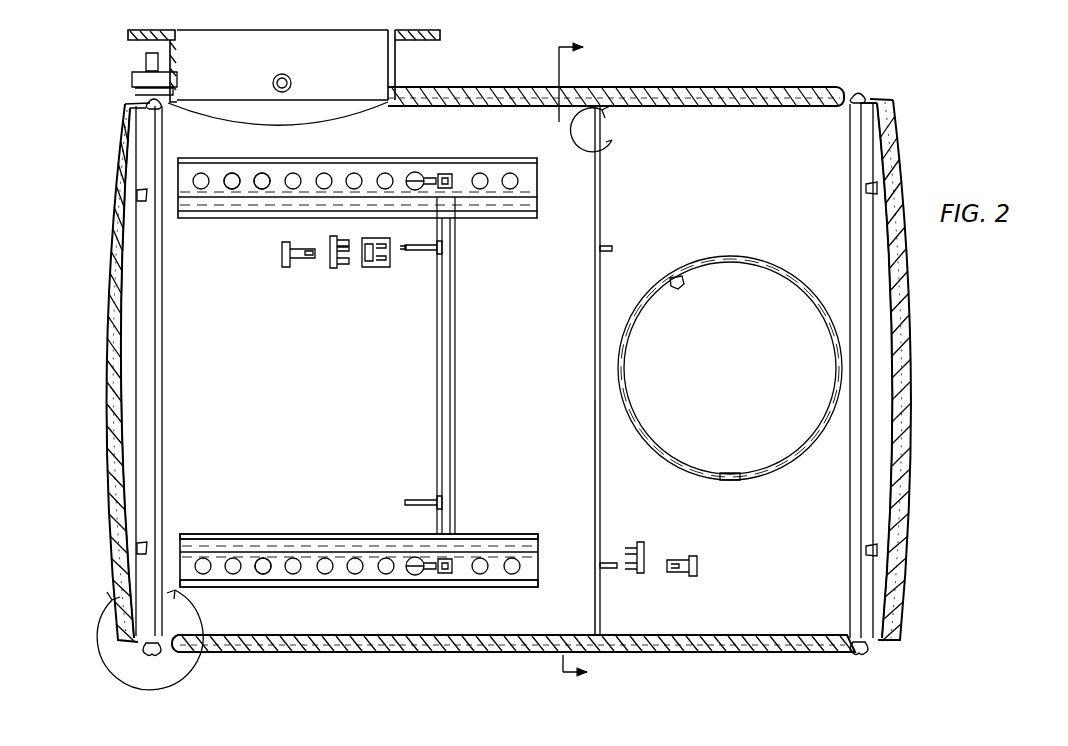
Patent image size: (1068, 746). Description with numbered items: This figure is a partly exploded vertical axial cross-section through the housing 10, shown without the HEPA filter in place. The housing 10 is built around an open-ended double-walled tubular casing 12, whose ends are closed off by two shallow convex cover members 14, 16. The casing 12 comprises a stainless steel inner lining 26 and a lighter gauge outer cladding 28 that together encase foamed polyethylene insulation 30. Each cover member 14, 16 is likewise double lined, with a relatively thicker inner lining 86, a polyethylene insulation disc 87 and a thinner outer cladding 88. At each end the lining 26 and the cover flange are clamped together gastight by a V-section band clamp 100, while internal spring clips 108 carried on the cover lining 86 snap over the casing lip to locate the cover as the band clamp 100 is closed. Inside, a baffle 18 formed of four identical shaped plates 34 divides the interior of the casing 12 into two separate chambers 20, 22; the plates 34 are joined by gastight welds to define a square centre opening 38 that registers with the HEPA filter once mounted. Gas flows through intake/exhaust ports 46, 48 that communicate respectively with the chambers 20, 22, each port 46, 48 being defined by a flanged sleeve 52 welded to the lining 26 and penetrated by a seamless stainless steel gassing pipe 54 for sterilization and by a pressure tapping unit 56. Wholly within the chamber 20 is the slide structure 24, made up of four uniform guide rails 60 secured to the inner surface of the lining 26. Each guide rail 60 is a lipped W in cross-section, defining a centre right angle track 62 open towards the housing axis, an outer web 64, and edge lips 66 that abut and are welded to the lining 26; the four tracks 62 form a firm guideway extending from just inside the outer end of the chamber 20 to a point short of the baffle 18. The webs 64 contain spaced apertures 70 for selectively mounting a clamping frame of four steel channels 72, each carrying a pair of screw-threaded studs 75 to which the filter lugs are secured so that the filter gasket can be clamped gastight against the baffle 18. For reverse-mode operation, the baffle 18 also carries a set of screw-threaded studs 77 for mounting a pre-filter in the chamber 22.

The housing 10 is at (920, 90).
The casing 12 is at (648, 82).
The cover member 14 is at (108, 160).
The cover member 16 is at (918, 345).
The baffle 18 is at (606, 212).
The chamber 20 is at (380, 370).
The chamber 22 is at (725, 370).
The slide structure 24 is at (268, 222).
The inner lining 26 is at (778, 108).
The outer cladding 28 is at (708, 88).
The insulation 30 is at (748, 92).
The plates 34 is at (602, 170).
The centre opening 38 is at (598, 497).
The intake/exhaust port 46 is at (232, 52).
The intake/exhaust port 48 is at (730, 368).
The flanged sleeve 52 is at (390, 72).
The gassing pipe 54 is at (291, 80).
The pressure tapping unit 56 is at (678, 284).
The guide rail 60 is at (206, 205).
The centre right angle track 62 is at (512, 534).
The outer web 64 is at (530, 560).
The edge lip 66 is at (344, 533).
The apertures 70 is at (262, 190).
The steel channel 72 is at (445, 173).
The screw-threaded stud 75 is at (413, 174).
The screw-threaded stud 77 is at (614, 248).
The inner lining 86 is at (118, 228).
The insulation disc 87 is at (113, 262).
The outer cladding 88 is at (113, 292).
The band clamp 100 is at (145, 100).
The spring clip 108 is at (136, 193).